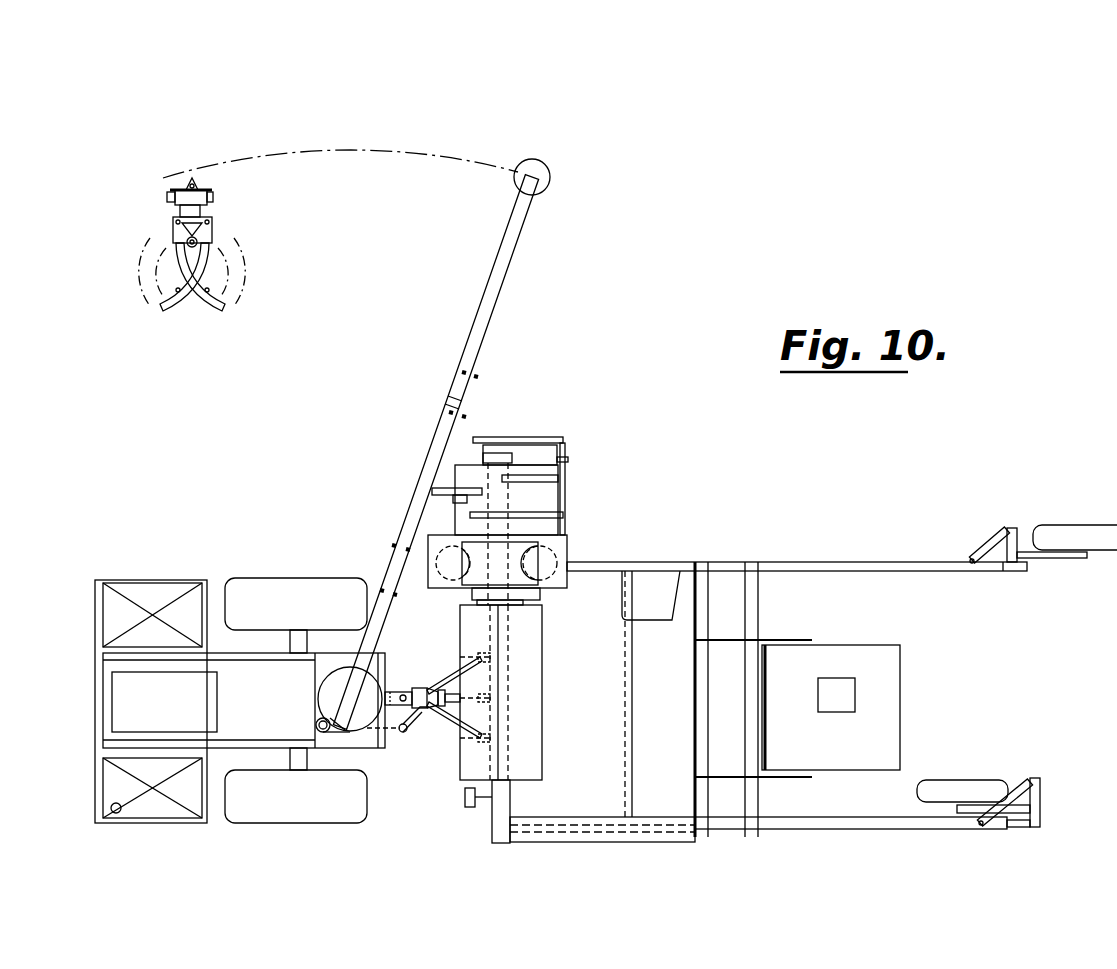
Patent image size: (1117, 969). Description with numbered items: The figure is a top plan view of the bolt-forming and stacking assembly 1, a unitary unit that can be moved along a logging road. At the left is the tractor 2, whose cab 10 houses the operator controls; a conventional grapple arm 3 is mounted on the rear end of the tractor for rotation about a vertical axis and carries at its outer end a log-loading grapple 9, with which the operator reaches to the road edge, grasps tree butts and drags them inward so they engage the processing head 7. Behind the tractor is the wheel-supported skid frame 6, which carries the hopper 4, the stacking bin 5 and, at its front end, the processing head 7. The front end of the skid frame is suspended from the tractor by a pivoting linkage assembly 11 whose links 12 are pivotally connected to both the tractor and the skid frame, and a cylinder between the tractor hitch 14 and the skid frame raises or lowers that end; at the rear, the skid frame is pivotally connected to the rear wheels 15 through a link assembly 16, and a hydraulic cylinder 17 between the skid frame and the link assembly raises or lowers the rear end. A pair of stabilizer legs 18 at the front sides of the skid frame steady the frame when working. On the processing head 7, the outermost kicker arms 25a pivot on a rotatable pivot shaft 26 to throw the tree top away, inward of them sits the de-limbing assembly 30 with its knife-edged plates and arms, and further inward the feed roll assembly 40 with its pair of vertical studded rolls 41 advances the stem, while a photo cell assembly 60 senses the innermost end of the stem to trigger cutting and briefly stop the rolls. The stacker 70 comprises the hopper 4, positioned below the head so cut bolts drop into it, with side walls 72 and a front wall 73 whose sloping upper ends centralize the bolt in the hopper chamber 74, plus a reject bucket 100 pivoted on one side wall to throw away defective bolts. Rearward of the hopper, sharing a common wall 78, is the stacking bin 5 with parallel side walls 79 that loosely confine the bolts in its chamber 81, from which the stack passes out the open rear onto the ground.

The bolt-forming and stacking assembly 1 is at (650, 506).
The tractor 2 is at (183, 574).
The grapple arm 3 is at (490, 328).
The hopper 4 is at (645, 560).
The stacking bin 5 is at (852, 562).
The skid frame 6 is at (780, 562).
The processing head 7 is at (573, 484).
The log-loading grapple 9 is at (222, 224).
The cab 10 is at (842, 648).
The pivoting linkage assembly 11 is at (444, 676).
The links 12 is at (446, 717).
The tractor hitch 14 is at (412, 690).
The rear wheels 15 is at (1078, 525).
The link assembly 16 is at (994, 528).
The hydraulic cylinder 17 is at (984, 545).
The stabilizer legs 18 is at (330, 690).
The kicker arms 25a is at (540, 437).
The pivot shaft 26 is at (568, 501).
The de-limbing assembly 30 is at (532, 477).
The feed roll assembly 40 is at (575, 555).
The studded rolls 41 is at (545, 575).
The photo cell assembly 60 is at (465, 798).
The stacker 70 is at (748, 560).
The side walls 72 is at (655, 817).
The front wall 73 is at (597, 700).
The hopper chamber 74 is at (679, 700).
The common wall 78 is at (695, 722).
The side walls 79 is at (913, 572).
The chamber 81 is at (952, 700).
The reject bucket 100 is at (662, 582).